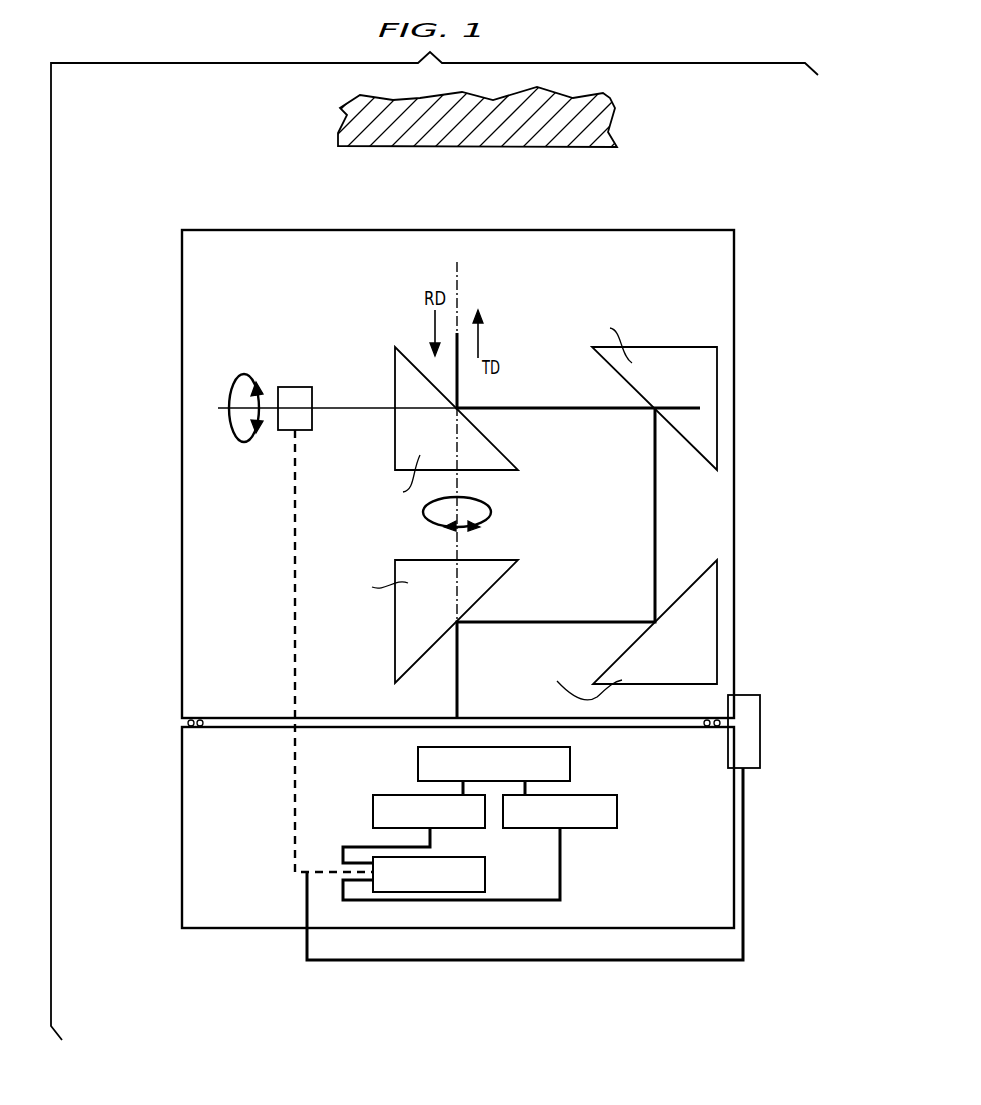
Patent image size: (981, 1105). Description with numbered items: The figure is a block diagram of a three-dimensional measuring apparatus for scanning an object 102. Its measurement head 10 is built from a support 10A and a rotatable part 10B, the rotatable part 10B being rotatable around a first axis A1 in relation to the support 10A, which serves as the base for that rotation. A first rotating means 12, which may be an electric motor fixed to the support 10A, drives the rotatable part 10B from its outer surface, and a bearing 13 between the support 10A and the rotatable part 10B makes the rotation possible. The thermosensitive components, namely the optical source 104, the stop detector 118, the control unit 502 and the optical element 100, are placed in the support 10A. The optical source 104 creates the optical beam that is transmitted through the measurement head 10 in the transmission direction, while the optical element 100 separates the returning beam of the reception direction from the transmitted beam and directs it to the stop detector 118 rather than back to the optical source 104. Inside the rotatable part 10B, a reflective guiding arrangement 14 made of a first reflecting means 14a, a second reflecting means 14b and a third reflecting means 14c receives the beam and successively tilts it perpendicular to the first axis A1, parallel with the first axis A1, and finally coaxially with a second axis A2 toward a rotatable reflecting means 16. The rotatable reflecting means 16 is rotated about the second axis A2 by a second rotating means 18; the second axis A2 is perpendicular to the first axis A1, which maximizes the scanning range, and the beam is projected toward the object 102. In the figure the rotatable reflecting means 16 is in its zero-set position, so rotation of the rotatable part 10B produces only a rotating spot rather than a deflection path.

The measurement head 10 is at (130, 392).
The support 10A is at (182, 792).
The rotatable part 10B is at (182, 248).
The first rotating means 12 is at (726, 762).
The bearing 13 is at (185, 722).
The reflective guiding arrangement 14 is at (533, 438).
The first reflecting means 14a is at (502, 560).
The second reflecting means 14b is at (600, 671).
The third reflecting means 14c is at (662, 346).
The rotatable reflecting means 16 is at (395, 370).
The second rotating means 18 is at (293, 387).
The optical element 100 is at (571, 758).
The object 102 is at (545, 148).
The optical source 104 is at (391, 795).
The stop detector 118 is at (594, 829).
The control unit 502 is at (487, 878).
The first axis A1 is at (460, 288).
The second axis A2 is at (338, 411).